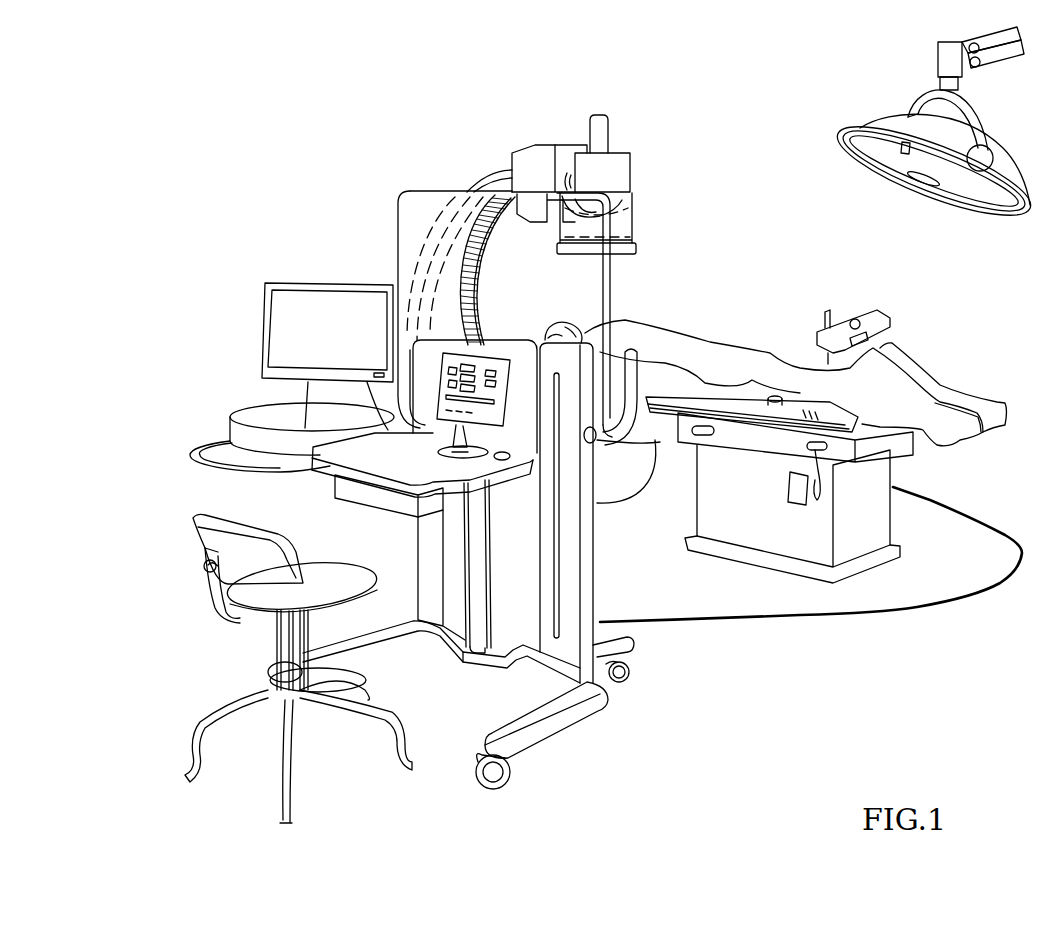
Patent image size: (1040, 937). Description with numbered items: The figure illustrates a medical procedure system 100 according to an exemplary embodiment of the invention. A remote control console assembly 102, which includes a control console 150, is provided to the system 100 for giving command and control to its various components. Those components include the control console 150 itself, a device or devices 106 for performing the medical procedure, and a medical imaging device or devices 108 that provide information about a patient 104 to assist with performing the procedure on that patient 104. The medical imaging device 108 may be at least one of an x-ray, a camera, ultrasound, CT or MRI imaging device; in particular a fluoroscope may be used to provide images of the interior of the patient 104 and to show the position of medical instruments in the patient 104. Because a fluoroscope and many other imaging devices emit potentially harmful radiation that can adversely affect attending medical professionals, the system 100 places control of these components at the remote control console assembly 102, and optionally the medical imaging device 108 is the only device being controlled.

The medical procedure system 100 is at (770, 90).
The remote control console assembly 102 is at (572, 560).
The patient 104 is at (708, 350).
The device for performing the medical procedure 106 is at (870, 322).
The medical imaging device 108 is at (608, 172).
The control console 150 is at (360, 452).